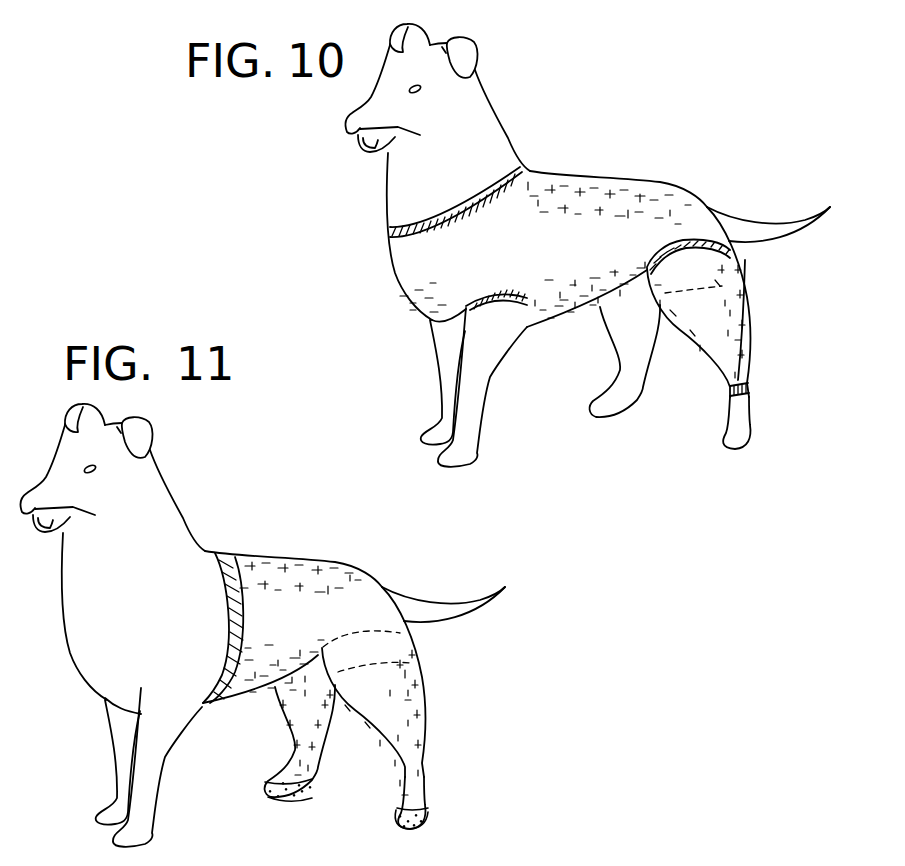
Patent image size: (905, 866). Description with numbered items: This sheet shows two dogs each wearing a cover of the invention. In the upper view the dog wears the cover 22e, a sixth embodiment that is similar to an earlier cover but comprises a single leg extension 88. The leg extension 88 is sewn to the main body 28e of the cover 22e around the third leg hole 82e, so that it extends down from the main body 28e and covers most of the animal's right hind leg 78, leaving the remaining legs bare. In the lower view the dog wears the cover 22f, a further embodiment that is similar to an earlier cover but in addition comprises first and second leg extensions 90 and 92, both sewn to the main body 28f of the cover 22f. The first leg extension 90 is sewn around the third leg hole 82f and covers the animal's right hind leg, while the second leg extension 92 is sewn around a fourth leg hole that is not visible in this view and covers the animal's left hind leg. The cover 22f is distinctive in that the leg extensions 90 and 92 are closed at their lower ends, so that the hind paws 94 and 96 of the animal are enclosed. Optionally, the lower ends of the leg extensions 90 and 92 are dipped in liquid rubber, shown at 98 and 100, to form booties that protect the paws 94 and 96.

In FIG. 10, the cover 22e is at (575, 173).
In FIG. 10, the main body 28e is at (613, 190).
In FIG. 10, the third leg hole 82e is at (752, 300).
In FIG. 10, the leg extension 88 is at (753, 330).
In FIG. 10, the right hind leg 78 is at (747, 400).
In FIG. 11, the cover 22f is at (270, 553).
In FIG. 11, the main body 28f is at (317, 583).
In FIG. 11, the third leg hole 82f is at (420, 673).
In FIG. 11, the first leg extension 90 is at (410, 707).
In FIG. 11, the second leg extension 92 is at (280, 700).
In FIG. 11, the hind paw 94 is at (270, 803).
In FIG. 11, the hind paw 96 is at (422, 830).
In FIG. 11, the bootie 98 is at (267, 787).
In FIG. 11, the bootie 100 is at (427, 813).